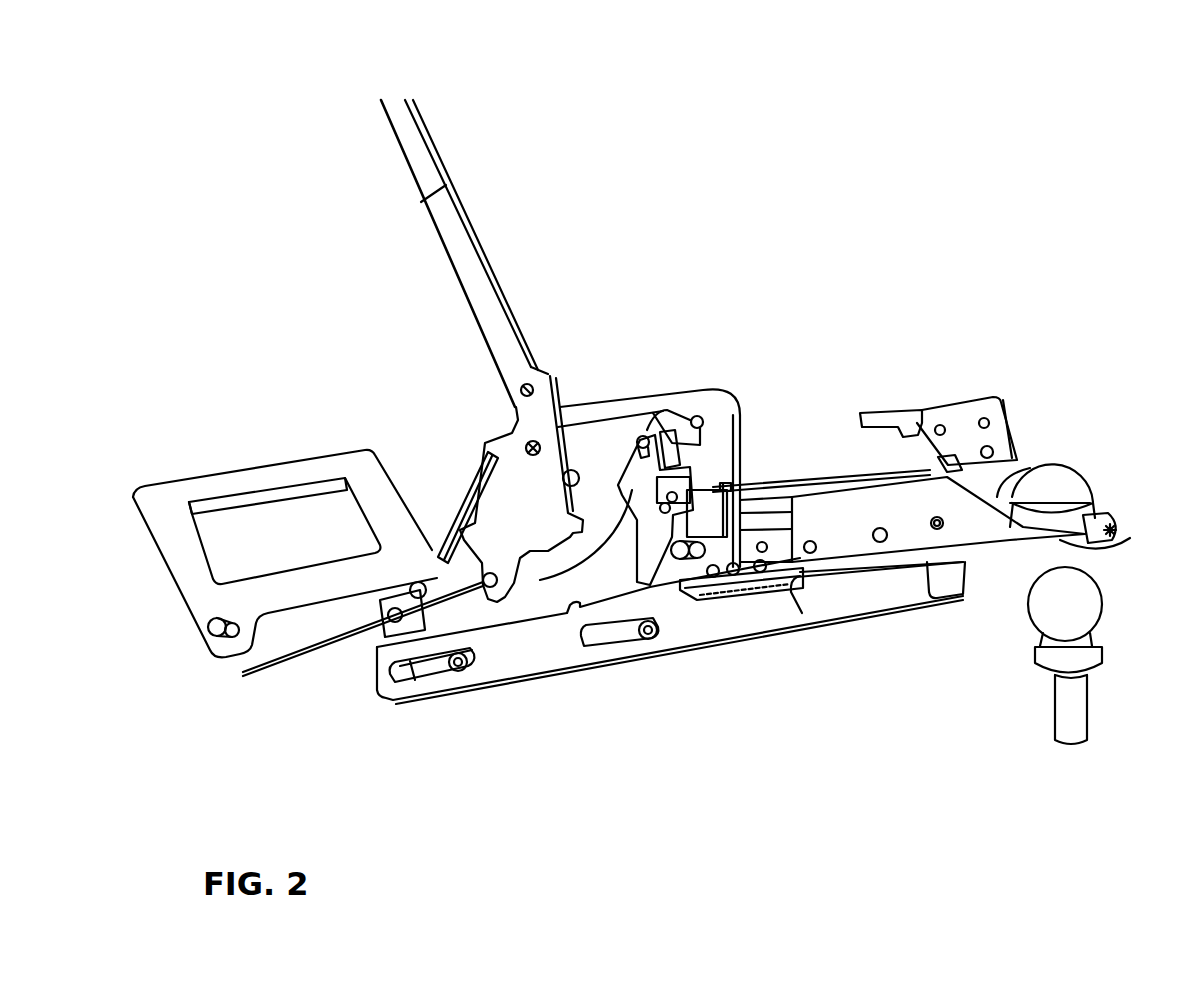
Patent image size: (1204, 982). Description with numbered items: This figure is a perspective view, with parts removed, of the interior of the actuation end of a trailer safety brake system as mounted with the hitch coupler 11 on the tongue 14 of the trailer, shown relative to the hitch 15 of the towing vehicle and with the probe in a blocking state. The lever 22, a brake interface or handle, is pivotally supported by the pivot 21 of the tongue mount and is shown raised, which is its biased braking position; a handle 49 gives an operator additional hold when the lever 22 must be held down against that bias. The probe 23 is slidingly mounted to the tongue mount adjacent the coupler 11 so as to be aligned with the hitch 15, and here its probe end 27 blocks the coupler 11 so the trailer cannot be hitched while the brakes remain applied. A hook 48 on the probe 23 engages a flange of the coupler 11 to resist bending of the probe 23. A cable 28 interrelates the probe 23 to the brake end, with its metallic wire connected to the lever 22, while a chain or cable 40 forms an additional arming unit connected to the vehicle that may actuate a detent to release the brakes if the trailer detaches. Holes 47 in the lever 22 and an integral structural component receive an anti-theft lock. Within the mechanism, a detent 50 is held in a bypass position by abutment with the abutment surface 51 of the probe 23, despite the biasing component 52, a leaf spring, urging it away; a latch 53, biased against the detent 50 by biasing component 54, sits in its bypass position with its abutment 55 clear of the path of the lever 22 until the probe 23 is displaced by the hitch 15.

The hitch coupler 11 is at (1075, 487).
The tongue 14 is at (912, 605).
The hitch 15 is at (1095, 605).
The pivot 21 is at (528, 446).
The lever 22 is at (500, 335).
The probe 23 is at (783, 625).
The probe end 27 is at (1087, 547).
The cable 28 is at (270, 668).
The cable 40 is at (773, 487).
The holes 47 is at (530, 385).
The hook 48 is at (1090, 517).
The handle 49 is at (157, 490).
The detent 50 is at (678, 477).
The abutment surface 51 is at (658, 602).
The biasing component 52 is at (713, 452).
The latch 53 is at (637, 463).
The biasing component 54 is at (650, 420).
The abutment 55 is at (623, 499).